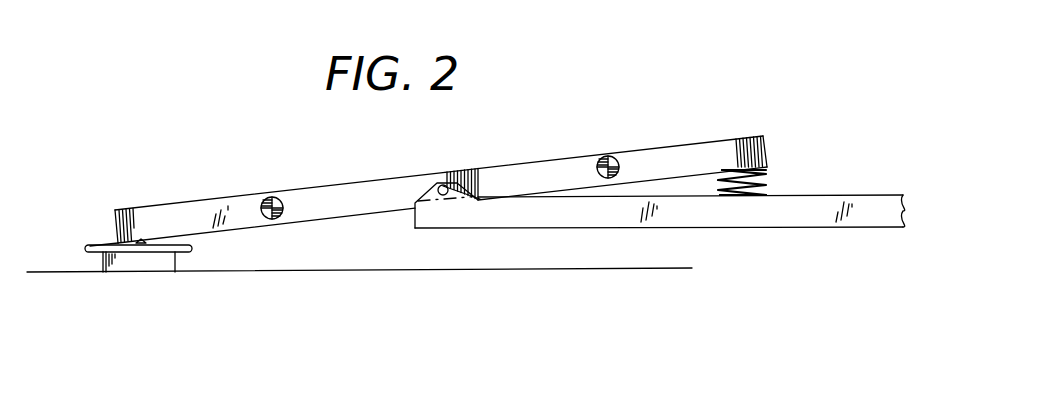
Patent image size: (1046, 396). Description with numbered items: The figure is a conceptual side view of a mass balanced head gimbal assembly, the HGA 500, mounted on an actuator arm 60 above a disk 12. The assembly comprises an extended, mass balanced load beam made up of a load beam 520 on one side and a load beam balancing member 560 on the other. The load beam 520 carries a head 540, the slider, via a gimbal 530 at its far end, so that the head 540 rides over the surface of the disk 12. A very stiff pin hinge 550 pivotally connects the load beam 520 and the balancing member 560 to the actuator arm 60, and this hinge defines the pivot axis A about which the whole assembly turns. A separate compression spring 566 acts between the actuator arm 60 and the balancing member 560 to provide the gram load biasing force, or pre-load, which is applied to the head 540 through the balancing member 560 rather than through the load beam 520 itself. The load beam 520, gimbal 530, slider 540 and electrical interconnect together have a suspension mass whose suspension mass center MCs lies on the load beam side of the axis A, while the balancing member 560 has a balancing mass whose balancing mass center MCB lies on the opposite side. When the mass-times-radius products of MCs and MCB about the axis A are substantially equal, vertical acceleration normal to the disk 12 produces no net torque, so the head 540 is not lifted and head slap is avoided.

The mass balanced HGA 500 is at (626, 80).
The load beam 520 is at (186, 212).
The gimbal 530 is at (88, 245).
The head 540 is at (183, 282).
The stiff pin hinge 550 is at (453, 213).
The balancing member 560 is at (537, 170).
The compression spring 566 is at (772, 175).
The actuator arm 60 is at (700, 210).
The disk 12 is at (361, 270).
The pivot axis A is at (443, 184).
The suspension mass center MCs is at (272, 197).
The balancing mass center MCB is at (612, 156).